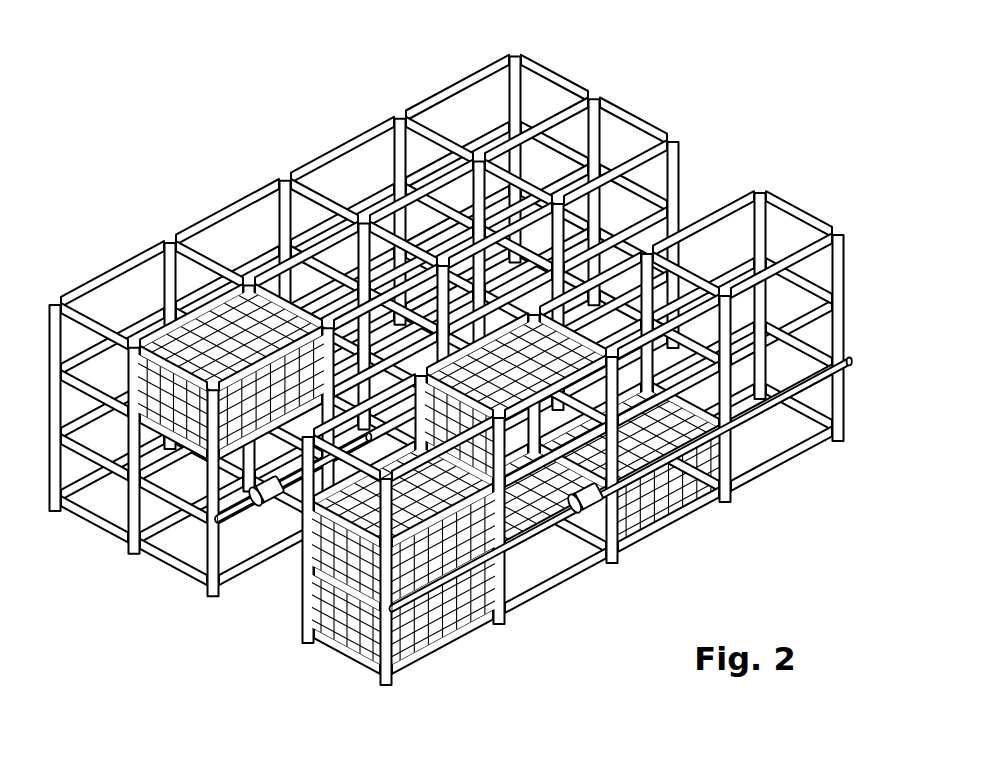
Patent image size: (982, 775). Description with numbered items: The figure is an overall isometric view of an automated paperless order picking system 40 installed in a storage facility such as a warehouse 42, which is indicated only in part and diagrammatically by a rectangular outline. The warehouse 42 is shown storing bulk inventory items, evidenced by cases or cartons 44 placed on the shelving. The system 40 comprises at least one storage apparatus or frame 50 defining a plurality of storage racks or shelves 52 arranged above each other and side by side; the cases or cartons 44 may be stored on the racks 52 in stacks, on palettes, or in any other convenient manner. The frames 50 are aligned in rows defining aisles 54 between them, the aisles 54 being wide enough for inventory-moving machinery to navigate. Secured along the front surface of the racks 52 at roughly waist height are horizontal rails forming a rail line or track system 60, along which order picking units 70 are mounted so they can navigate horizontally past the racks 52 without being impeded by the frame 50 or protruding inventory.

The automated paperless order picking system 40 is at (91, 256).
The warehouse 42 is at (147, 211).
The cases or cartons 44 is at (682, 487).
The storage apparatus or frame 50 is at (663, 133).
The storage racks or shelves 52 is at (820, 327).
The aisles 54 is at (252, 582).
The rail line or track system 60 is at (517, 545).
The order picking units 70 is at (588, 510).